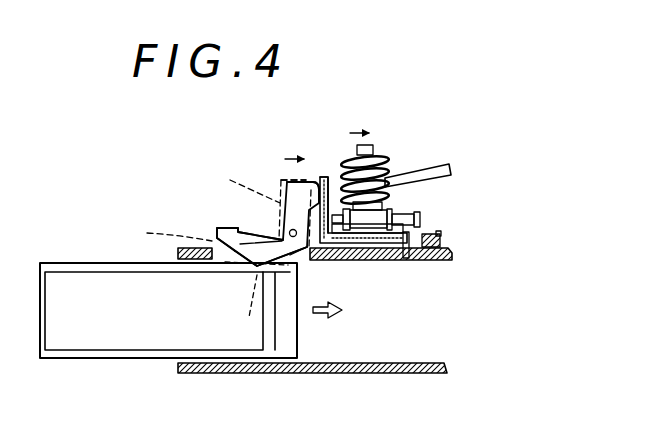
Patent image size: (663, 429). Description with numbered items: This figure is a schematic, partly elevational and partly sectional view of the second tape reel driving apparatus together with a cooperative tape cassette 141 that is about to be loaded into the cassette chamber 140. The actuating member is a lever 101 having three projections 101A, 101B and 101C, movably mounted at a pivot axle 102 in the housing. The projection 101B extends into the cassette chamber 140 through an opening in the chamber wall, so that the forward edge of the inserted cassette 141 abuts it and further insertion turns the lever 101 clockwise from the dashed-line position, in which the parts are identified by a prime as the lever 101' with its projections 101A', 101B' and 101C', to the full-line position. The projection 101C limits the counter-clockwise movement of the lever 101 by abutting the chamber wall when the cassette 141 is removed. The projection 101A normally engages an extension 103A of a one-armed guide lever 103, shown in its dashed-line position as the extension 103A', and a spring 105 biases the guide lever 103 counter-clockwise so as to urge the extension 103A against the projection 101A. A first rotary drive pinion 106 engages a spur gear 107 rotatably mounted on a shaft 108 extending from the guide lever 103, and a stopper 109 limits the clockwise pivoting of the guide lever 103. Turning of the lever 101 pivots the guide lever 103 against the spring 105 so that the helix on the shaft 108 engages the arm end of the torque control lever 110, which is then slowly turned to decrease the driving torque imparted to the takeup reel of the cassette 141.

The lever 101 is at (258, 206).
The lever in dashed-line position 101' is at (225, 186).
The projection 101A is at (316, 137).
The projection in dashed-line position 101A' is at (276, 149).
The projection 101B is at (254, 281).
The projection in dashed-line position 101B' is at (249, 302).
The projection 101C is at (208, 224).
The projection in dashed-line position 101C' is at (158, 233).
The pivot axle 102 is at (282, 222).
The guide lever 103 is at (383, 243).
The extension 103A is at (325, 167).
The extension in dashed-line position 103A' is at (327, 270).
The spring 105 is at (428, 228).
The first rotary drive pinion 106 is at (373, 218).
The spur gear 107 is at (402, 205).
The shaft 108 is at (388, 160).
The stopper 109 is at (441, 242).
The torque control lever 110 is at (440, 168).
The cassette chamber 140 is at (123, 340).
The tape cassette 141 is at (380, 352).